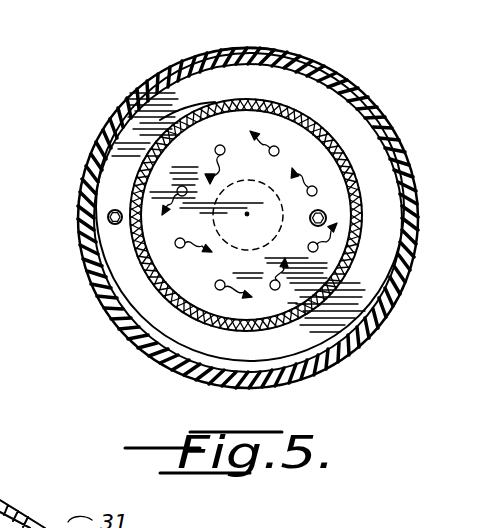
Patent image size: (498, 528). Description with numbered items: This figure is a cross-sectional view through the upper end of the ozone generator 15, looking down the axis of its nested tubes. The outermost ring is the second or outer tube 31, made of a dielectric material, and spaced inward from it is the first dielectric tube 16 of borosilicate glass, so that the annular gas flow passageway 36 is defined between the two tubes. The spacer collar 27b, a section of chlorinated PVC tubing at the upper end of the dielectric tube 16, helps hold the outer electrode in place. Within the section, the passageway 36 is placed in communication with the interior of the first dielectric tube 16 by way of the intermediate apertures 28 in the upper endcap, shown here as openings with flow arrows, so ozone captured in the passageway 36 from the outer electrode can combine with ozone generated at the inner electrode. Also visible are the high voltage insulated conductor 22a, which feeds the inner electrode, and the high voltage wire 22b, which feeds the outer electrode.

The ozone generator 15 is at (360, 67).
The first dielectric tube 16 is at (330, 156).
The high voltage insulated conductor 22a is at (326, 217).
The high voltage wire 22b is at (109, 222).
The spacer collar 27b is at (188, 112).
The intermediate apertures 28 is at (216, 147).
The second or outer tube 31 is at (258, 50).
The gas flow passageway 36 is at (118, 290).